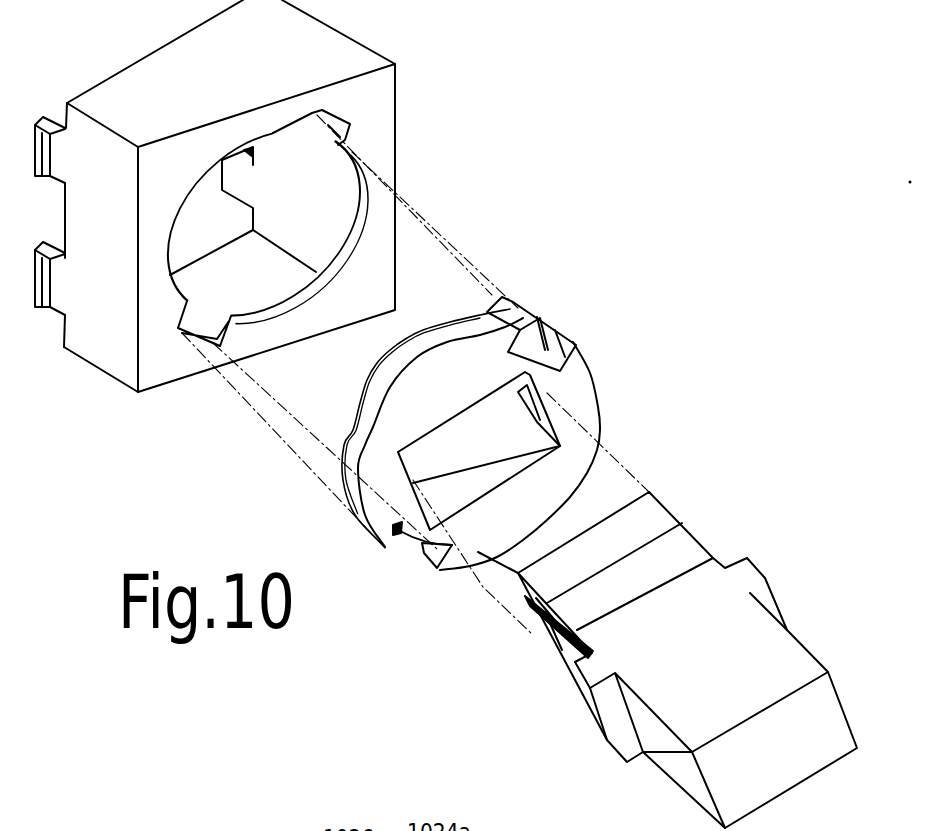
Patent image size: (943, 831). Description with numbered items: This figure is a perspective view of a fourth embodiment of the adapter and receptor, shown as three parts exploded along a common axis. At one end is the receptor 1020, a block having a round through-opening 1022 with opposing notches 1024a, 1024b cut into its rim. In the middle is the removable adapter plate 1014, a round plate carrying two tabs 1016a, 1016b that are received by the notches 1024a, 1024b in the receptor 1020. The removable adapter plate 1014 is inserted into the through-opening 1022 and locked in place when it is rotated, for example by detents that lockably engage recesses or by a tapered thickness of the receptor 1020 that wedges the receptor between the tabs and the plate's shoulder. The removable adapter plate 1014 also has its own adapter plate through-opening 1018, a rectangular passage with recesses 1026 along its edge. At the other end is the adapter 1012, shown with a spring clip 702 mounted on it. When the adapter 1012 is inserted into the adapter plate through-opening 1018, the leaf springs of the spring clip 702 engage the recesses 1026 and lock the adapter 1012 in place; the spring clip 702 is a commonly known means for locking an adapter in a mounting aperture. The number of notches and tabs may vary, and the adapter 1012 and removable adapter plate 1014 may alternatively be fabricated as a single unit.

The spring clip 702 is at (542, 636).
The adapter 1012 is at (805, 650).
The removable adapter plate 1014 is at (646, 332).
The tab 1016a is at (505, 296).
The tab 1016b is at (399, 541).
The adapter plate through-opening 1018 is at (540, 461).
The receptor 1020 is at (372, 53).
The through-opening 1022 is at (364, 218).
The notch 1024a is at (355, 130).
The notch 1024b is at (178, 328).
The recesses 1026 is at (536, 418).